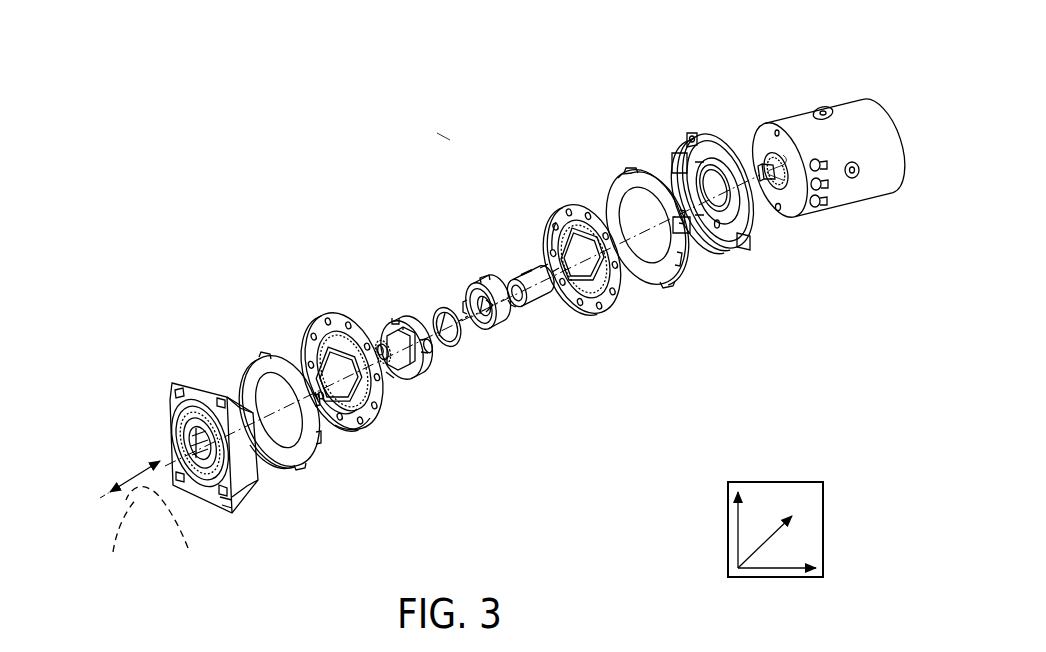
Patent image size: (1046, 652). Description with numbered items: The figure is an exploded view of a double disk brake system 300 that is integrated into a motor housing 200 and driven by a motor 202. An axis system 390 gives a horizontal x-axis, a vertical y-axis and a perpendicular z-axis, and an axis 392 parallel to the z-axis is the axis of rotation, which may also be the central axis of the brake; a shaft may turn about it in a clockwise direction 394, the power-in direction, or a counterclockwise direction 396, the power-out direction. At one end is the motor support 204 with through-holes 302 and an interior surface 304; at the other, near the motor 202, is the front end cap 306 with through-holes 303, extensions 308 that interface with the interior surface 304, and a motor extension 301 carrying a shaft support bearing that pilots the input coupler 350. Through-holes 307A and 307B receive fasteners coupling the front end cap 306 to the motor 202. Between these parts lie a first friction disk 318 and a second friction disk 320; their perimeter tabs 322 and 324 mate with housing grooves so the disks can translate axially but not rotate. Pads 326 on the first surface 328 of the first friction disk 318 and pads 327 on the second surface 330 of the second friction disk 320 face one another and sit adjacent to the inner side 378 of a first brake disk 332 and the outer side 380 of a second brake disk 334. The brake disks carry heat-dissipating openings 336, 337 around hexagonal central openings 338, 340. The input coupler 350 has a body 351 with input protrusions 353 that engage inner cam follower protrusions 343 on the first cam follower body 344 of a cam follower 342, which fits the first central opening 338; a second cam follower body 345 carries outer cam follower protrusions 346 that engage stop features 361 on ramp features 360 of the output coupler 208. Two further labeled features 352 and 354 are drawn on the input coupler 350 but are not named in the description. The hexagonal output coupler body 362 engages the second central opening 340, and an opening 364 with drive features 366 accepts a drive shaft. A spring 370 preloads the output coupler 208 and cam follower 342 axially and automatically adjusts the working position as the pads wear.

The motor housing 200 is at (880, 77).
The motor 202 is at (803, 109).
The motor support 204 is at (172, 410).
The output coupler 208 is at (391, 309).
The double disk brake system 300 is at (437, 133).
The motor extension 301 is at (785, 162).
The through-holes 302 is at (175, 388).
The through-holes 303 is at (745, 240).
The interior surface 304 is at (211, 460).
The front end cap 306 is at (690, 131).
The through-hole 307A is at (718, 230).
The through-hole 307B is at (780, 209).
The extensions 308 is at (738, 215).
The first friction disk 318 is at (686, 281).
The second friction disk 320 is at (245, 367).
The extensions (tabs) 322 is at (622, 170).
The extensions (tabs) 324 is at (305, 462).
The pads 326 is at (603, 197).
The pads 327 is at (323, 440).
The first surface 328 is at (645, 282).
The second surface 330 is at (292, 362).
The first brake disk 332 is at (551, 206).
The second brake disk 334 is at (327, 312).
The openings 336 is at (558, 222).
The openings 337 is at (312, 322).
The first central opening 338 is at (592, 268).
The second central opening 340 is at (357, 396).
The cam follower 342 is at (455, 284).
The inner cam follower protrusions 343 is at (484, 332).
The first cam follower body 344 is at (503, 316).
The second cam follower body 345 is at (478, 283).
The outer cam follower protrusions 346 is at (497, 335).
The input coupler 350 is at (508, 260).
The body 351 is at (547, 296).
The coupler shaft 352 is at (558, 285).
The input protrusions 353 is at (527, 277).
The coupler 354 is at (522, 306).
The ramp features 360 is at (413, 327).
The stop features 361 is at (436, 353).
The output coupler body 362 is at (401, 327).
The opening 364 is at (382, 340).
The drive features 366 is at (398, 375).
The spring 370 is at (449, 347).
The inner side 378 is at (580, 202).
The outer side 380 is at (357, 420).
The axis system 390 is at (823, 500).
The axis 392 is at (87, 506).
The clockwise direction 394 is at (163, 536).
The counterclockwise direction 396 is at (118, 542).